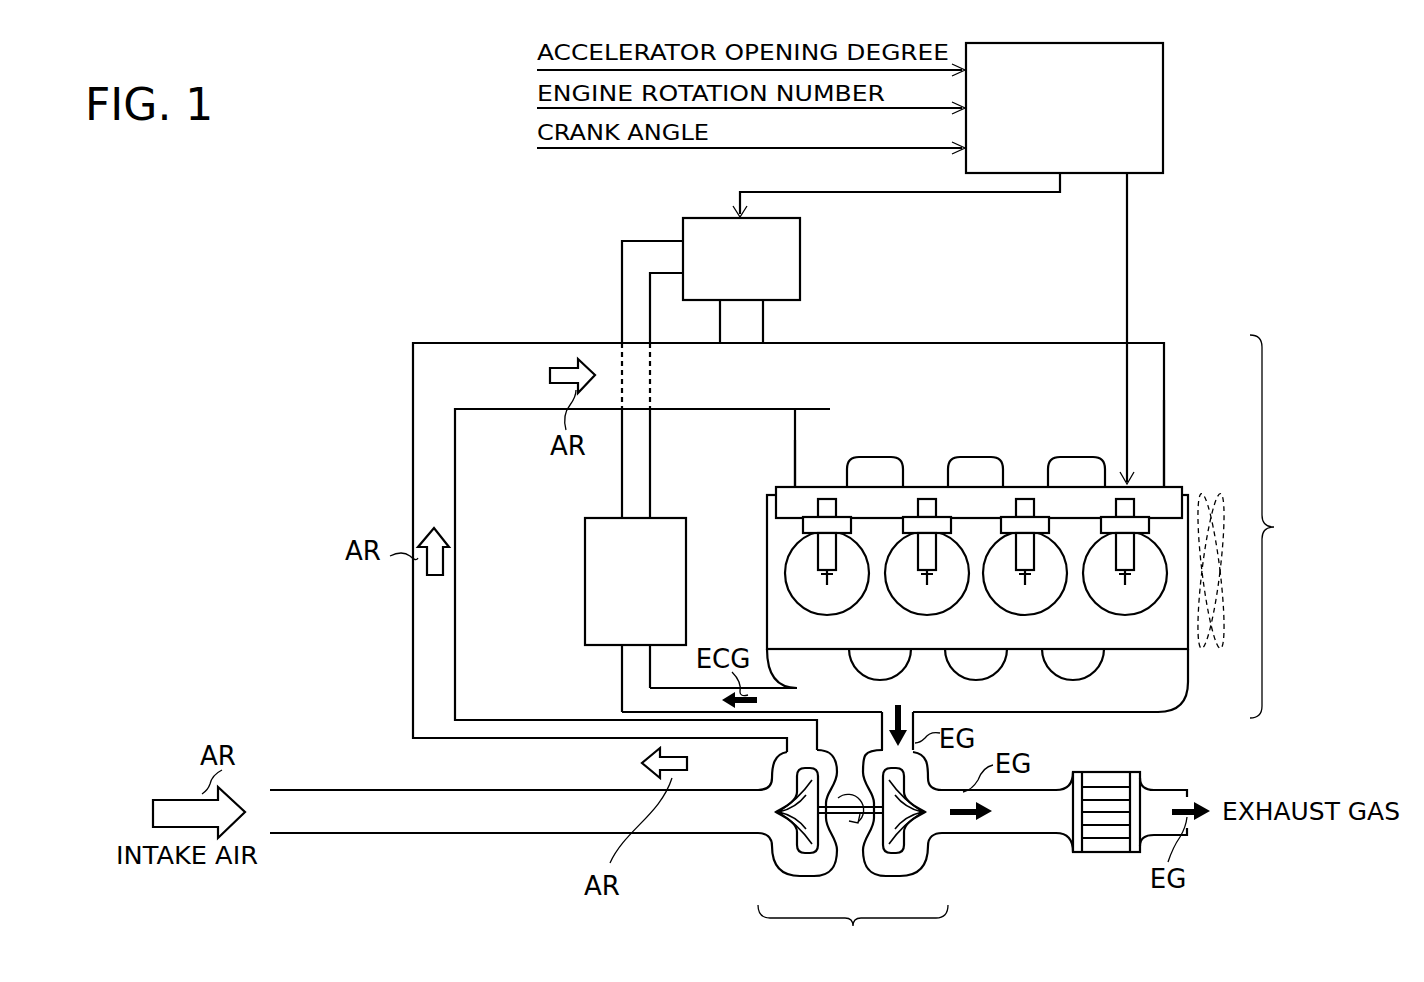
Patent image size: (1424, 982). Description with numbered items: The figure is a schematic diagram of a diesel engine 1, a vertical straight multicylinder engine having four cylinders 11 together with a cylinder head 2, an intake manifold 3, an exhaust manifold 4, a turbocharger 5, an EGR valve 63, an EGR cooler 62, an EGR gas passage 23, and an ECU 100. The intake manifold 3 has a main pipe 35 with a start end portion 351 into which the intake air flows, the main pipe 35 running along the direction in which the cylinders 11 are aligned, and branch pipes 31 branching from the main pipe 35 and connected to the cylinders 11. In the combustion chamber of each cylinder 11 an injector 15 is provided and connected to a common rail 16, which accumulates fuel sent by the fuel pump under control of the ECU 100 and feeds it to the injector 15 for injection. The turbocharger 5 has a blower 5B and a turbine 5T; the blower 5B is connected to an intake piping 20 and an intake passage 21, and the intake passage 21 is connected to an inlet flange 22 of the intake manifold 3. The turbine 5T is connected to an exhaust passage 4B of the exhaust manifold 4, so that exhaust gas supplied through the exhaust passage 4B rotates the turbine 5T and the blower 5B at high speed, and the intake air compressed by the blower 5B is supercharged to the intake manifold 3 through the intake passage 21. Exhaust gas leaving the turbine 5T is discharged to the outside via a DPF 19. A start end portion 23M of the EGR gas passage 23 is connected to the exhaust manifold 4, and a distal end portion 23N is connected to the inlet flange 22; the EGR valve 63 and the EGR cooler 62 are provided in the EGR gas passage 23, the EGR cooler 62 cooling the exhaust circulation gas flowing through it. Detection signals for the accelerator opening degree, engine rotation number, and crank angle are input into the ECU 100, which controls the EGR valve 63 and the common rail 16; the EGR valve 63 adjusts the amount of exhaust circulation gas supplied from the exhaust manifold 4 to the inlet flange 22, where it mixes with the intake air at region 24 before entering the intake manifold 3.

The diesel engine 1 is at (1272, 526).
The cylinder head 2 is at (1175, 621).
The intake manifold 3 is at (1150, 390).
The exhaust manifold 4 is at (1160, 687).
The exhaust passage 4B is at (882, 735).
The turbocharger 5 is at (915, 858).
The blower 5B is at (808, 850).
The turbine 5T is at (895, 853).
The cylinder 11 is at (808, 590).
The injector 15 is at (838, 557).
The common rail 16 is at (978, 500).
The DPF 19 is at (1106, 853).
The intake piping 20 is at (417, 834).
The intake passage 21 is at (487, 715).
The inlet flange 22 is at (570, 343).
The EGR gas passage 23 is at (622, 502).
The start end portion 23M is at (781, 698).
The distal end portion 23N is at (767, 320).
The EGR gas mixing portion 24 is at (740, 388).
The branch pipe 31 is at (822, 470).
The main pipe 35 is at (1135, 373).
The start end portion 351 is at (795, 425).
The EGR cooler 62 is at (585, 572).
The EGR valve 63 is at (803, 258).
The ECU 100 is at (1165, 110).